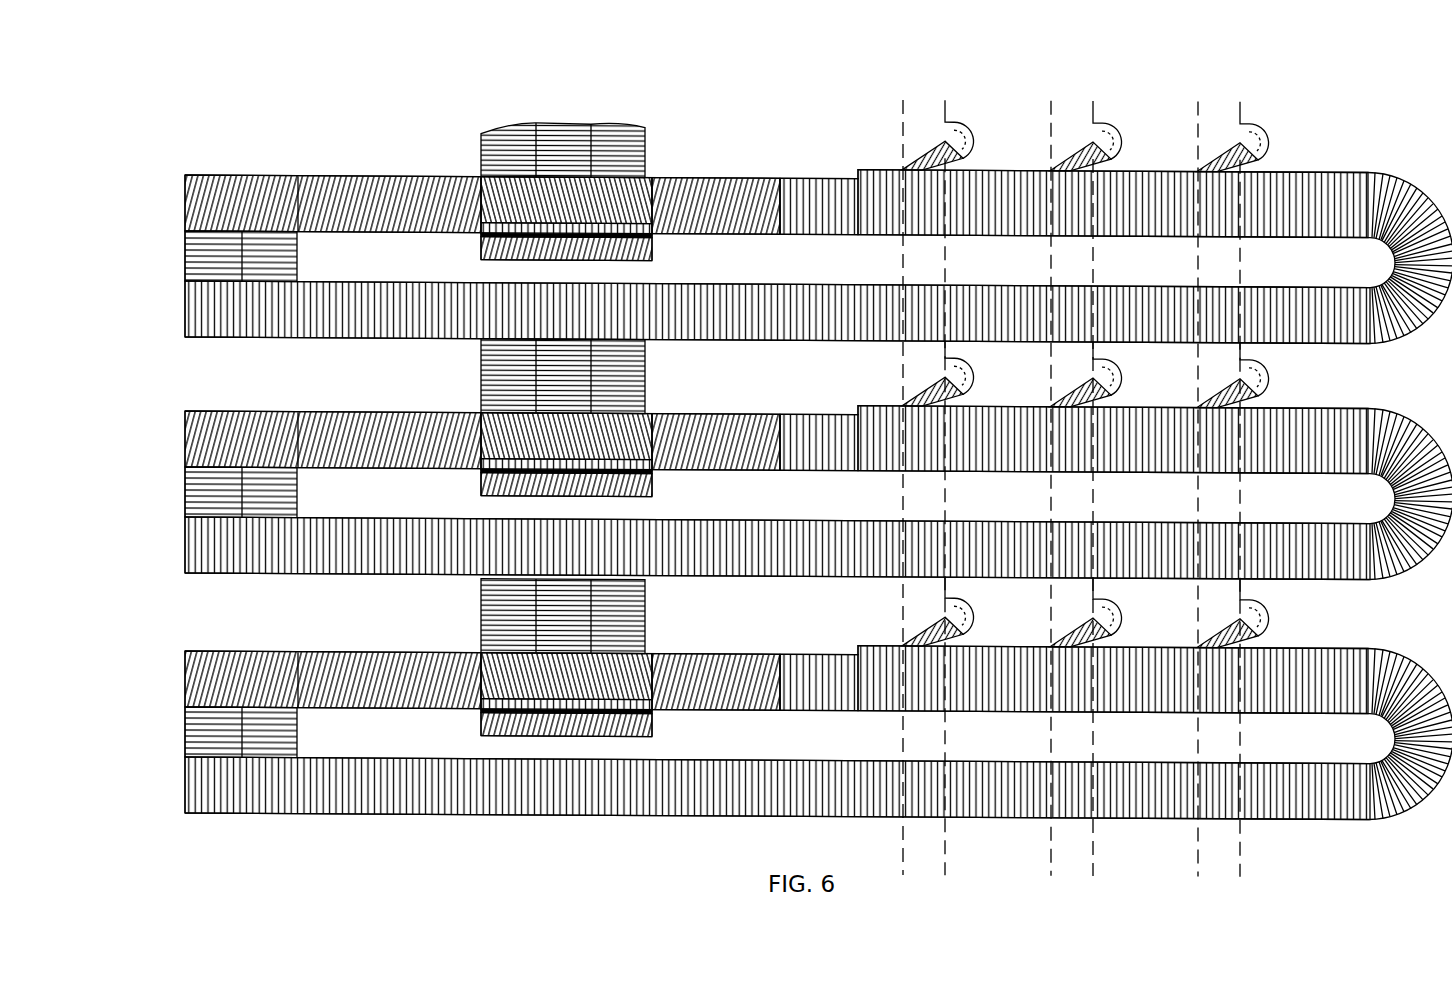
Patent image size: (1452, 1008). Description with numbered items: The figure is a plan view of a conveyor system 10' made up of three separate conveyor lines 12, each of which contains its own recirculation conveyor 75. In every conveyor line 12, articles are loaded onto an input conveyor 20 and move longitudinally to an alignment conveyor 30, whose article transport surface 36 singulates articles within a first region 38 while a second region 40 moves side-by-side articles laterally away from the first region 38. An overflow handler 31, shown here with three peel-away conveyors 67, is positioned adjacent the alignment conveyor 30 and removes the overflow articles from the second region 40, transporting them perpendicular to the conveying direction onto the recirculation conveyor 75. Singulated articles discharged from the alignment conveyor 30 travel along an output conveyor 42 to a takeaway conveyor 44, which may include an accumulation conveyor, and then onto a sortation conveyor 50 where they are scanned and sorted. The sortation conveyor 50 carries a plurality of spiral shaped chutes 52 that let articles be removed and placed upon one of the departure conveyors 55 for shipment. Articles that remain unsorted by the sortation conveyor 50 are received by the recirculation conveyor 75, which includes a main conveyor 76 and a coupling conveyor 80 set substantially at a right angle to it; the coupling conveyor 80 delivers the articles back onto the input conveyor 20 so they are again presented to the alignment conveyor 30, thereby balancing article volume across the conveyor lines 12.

The conveyor system 10' is at (796, 459).
The conveyor line 12 is at (796, 459).
The input conveyor 20 is at (363, 174).
The alignment conveyor 30 is at (655, 243).
The overflow handler 31 is at (550, 396).
The article transport surface 36 is at (518, 190).
The first region 38 is at (482, 245).
The second region 40 is at (654, 183).
The output conveyor 42 is at (760, 173).
The takeaway conveyor 44 is at (815, 176).
The sortation conveyor 50 is at (1018, 168).
The spiral shaped chute 52 is at (935, 382).
The departure conveyor 55 is at (903, 122).
The peel-away conveyor 67 is at (572, 135).
The recirculation conveyor 75 is at (318, 280).
The main conveyor 76 is at (315, 338).
The coupling conveyor 80 is at (185, 256).